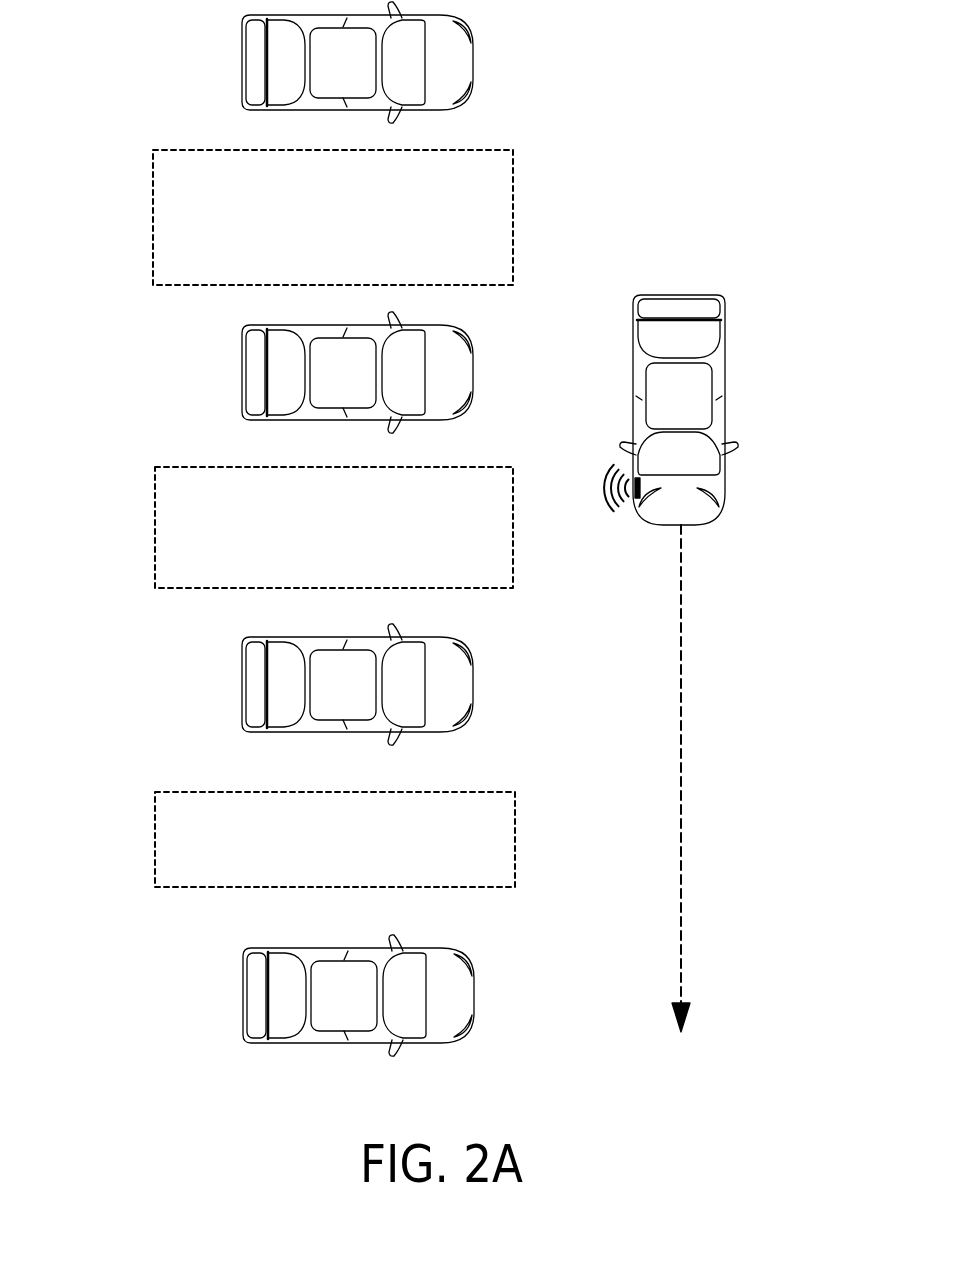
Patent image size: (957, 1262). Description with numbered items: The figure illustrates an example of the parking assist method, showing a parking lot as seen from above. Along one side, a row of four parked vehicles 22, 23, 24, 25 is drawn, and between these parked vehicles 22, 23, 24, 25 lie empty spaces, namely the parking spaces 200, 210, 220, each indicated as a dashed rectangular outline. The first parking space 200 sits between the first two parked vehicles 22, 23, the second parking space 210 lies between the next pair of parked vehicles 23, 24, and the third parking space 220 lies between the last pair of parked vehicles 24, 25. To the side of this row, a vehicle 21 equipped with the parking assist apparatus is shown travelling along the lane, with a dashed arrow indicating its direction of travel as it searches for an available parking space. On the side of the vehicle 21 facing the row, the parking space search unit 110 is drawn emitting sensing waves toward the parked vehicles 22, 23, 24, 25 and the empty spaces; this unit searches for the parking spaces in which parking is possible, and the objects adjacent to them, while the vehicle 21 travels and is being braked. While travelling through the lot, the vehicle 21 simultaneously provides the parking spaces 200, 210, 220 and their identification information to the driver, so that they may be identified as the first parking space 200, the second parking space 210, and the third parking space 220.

The vehicle 21 is at (727, 491).
The parked vehicle 22 is at (240, 48).
The parked vehicle 23 is at (240, 358).
The parked vehicle 24 is at (240, 670).
The parked vehicle 25 is at (241, 981).
The parking space search unit 110 is at (637, 500).
The first parking space 200 is at (153, 220).
The second parking space 210 is at (155, 530).
The third parking space 220 is at (155, 840).